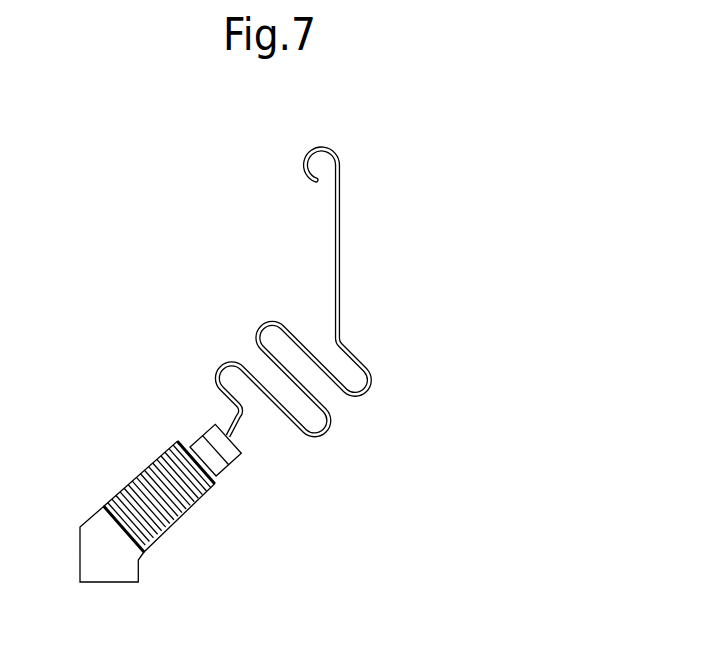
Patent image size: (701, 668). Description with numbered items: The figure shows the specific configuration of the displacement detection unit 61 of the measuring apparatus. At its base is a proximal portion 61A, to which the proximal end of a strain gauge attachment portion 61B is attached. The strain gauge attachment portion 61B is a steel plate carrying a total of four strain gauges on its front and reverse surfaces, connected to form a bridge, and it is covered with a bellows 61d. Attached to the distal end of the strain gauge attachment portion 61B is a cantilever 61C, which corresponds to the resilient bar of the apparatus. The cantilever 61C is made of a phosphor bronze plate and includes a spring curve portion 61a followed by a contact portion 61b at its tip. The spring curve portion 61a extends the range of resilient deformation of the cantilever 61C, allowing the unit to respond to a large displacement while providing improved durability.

The displacement detection unit 61 is at (288, 334).
The spring curve portion 61a is at (403, 377).
The contact portion 61b is at (322, 147).
The cantilever 61C is at (350, 248).
The strain gauge attachment portion 61B is at (160, 455).
The proximal portion 61A is at (101, 526).
The bellows 61d is at (193, 510).